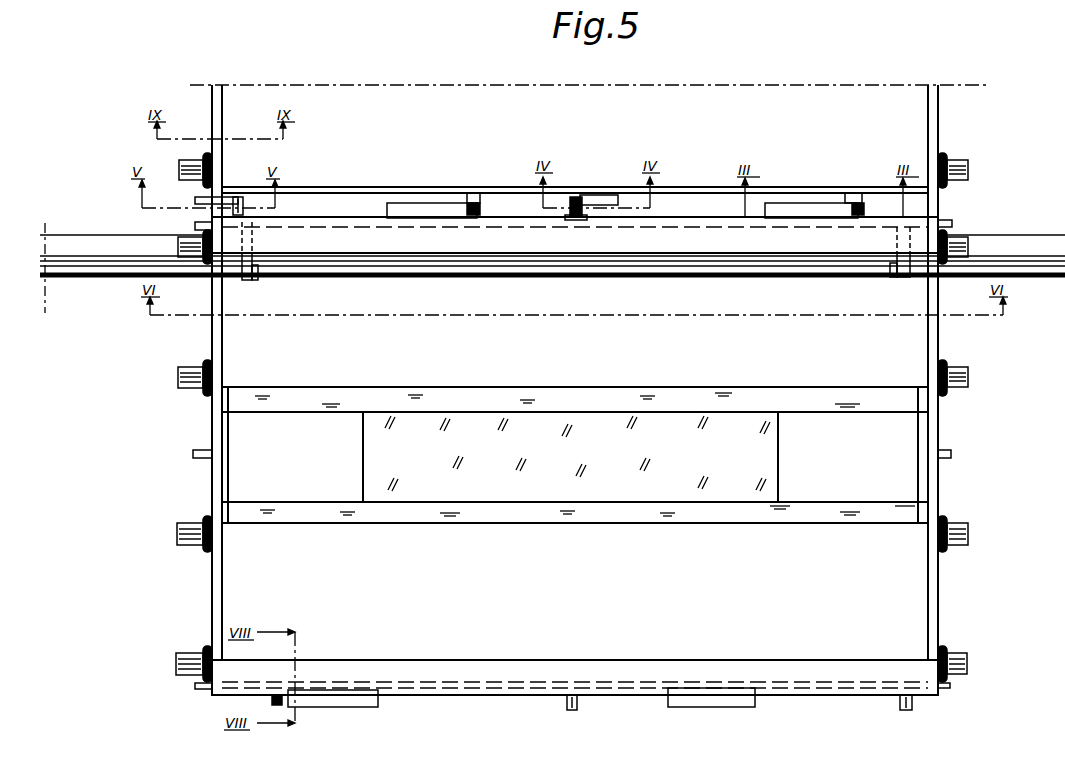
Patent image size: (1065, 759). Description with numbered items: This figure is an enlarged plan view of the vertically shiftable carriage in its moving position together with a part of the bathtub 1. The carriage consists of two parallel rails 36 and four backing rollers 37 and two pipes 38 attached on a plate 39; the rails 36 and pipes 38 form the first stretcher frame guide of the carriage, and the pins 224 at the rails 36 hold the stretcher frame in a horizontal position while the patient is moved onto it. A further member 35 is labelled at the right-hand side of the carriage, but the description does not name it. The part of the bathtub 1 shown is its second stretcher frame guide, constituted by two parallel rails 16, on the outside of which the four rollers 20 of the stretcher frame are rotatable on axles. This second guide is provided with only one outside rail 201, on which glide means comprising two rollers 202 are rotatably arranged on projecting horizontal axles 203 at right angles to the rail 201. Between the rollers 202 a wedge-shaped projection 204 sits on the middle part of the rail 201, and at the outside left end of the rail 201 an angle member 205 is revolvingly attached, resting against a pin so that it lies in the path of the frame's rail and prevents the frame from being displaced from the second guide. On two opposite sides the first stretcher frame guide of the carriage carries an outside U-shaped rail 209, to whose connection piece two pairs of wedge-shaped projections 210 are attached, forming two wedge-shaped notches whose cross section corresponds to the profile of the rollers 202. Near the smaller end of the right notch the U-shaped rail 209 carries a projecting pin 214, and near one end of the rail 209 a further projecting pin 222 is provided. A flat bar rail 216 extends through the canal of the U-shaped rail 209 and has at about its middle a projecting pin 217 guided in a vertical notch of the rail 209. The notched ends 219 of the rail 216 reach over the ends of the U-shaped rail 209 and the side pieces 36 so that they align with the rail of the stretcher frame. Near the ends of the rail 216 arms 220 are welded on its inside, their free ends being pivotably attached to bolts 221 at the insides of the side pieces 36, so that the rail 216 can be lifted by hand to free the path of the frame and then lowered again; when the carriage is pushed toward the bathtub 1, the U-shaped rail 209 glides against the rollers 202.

The bathtub 1 is at (88, 268).
The rails 16 is at (216, 120).
The rollers 20 is at (190, 170).
The right frame member 35 is at (940, 435).
The rails 36 is at (216, 352).
The backing rollers 37 is at (190, 258).
The pipes 38 is at (303, 402).
The plate 39 is at (377, 471).
The outside rail 201 is at (318, 191).
The rollers 202 is at (478, 210).
The horizontal axles 203 is at (472, 193).
The wedge-shaped projection 204 is at (606, 199).
The angle member 205 is at (203, 199).
The U-shaped rail 209 is at (336, 247).
The wedge-shaped projections 210 is at (421, 209).
The projecting pin 214 is at (866, 216).
The flat bar rail 216 is at (376, 229).
The projecting pin 217 is at (574, 218).
The notched ends 219 is at (197, 228).
The arms 220 is at (247, 279).
The bolts 221 is at (258, 273).
The projecting pin 222 is at (240, 211).
The pins 224 is at (195, 453).